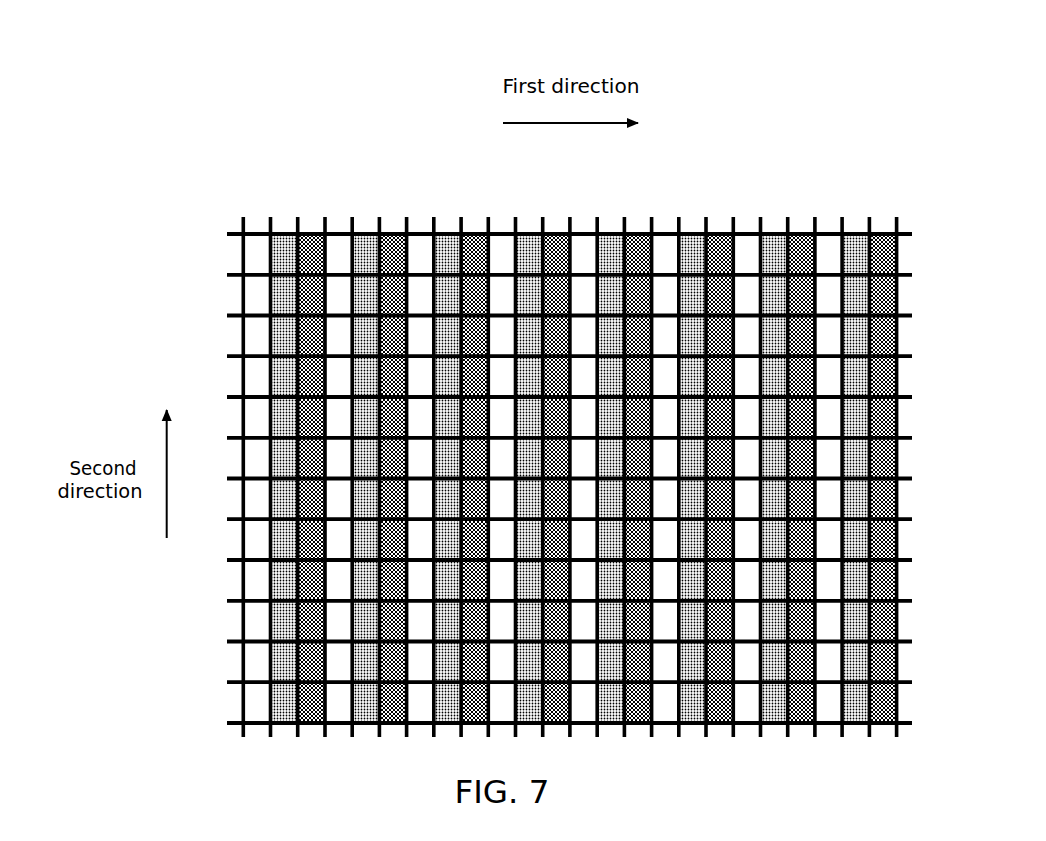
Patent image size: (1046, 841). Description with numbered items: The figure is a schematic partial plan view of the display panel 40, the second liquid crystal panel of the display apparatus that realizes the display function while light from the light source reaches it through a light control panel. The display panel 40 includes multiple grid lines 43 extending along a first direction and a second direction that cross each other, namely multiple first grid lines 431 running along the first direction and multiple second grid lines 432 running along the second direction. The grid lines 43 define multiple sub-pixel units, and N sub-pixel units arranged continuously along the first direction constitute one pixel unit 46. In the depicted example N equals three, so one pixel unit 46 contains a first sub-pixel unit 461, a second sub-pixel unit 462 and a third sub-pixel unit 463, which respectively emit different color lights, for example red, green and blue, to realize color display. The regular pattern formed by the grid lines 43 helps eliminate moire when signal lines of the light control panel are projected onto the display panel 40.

The display panel 40 is at (762, 87).
The grid lines 43 is at (855, 135).
The first grid lines 431 is at (843, 232).
The second grid lines 432 is at (899, 232).
The pixel unit 46 is at (263, 141).
The first sub-pixel unit 461 is at (245, 247).
The second sub-pixel unit 462 is at (285, 245).
The third sub-pixel unit 463 is at (323, 240).